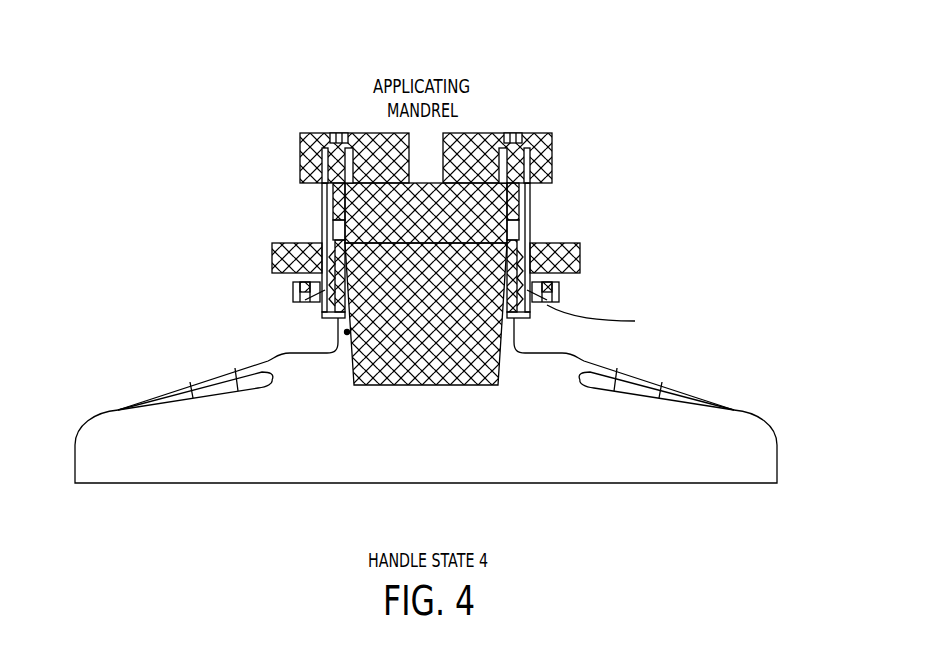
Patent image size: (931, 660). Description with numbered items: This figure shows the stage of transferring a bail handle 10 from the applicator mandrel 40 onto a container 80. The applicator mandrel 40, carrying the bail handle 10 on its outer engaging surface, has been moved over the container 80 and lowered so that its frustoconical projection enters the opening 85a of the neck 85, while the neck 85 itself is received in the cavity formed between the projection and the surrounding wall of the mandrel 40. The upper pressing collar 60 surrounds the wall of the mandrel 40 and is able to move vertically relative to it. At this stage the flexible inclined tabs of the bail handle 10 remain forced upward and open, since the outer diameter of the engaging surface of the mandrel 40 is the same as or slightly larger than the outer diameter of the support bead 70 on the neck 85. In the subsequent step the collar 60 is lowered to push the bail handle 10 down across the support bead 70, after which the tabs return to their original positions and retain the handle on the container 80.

The bail handle 10 is at (560, 292).
The applicator mandrel 40 is at (473, 205).
The upper pressing collar 60 is at (580, 258).
The support bead 70 is at (322, 318).
The container 80 is at (757, 450).
The neck 85 is at (518, 345).
The opening 85a is at (347, 332).